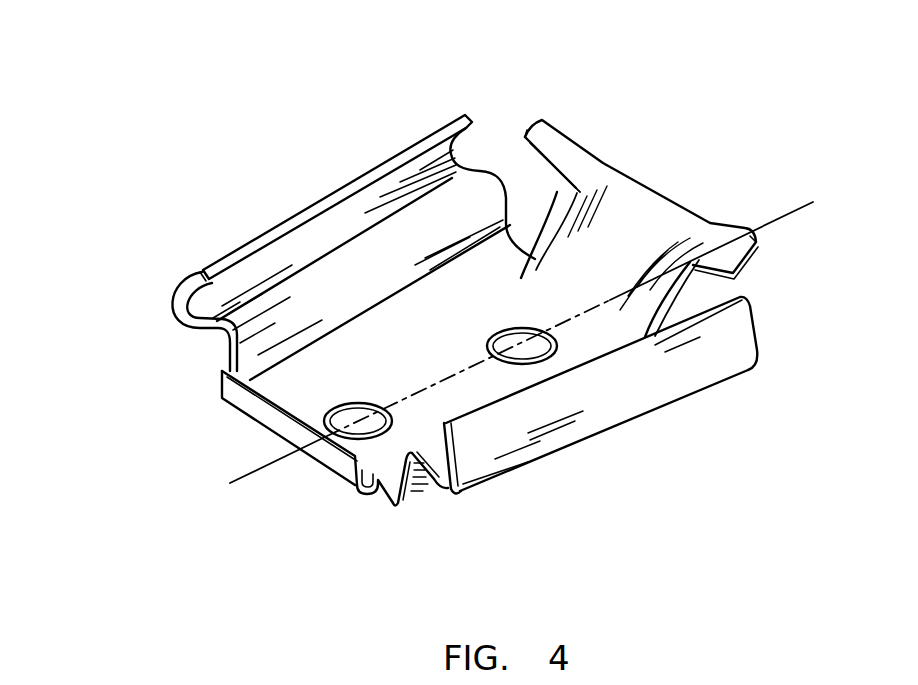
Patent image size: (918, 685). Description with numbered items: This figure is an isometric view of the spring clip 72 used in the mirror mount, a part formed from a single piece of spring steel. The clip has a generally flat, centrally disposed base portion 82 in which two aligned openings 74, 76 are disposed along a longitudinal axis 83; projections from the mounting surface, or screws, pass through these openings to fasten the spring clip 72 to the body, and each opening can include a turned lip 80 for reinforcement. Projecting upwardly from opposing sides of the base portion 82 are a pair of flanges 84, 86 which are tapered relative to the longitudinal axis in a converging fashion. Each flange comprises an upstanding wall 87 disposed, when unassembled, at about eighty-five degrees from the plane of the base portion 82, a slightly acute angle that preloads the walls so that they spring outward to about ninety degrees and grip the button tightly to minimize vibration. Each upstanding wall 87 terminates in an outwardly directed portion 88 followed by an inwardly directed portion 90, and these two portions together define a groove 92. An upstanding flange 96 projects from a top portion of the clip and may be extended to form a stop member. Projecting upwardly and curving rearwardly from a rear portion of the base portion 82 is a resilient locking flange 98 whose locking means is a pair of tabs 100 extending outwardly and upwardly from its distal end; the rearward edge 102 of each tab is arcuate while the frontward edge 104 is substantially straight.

The spring clip 72 is at (760, 382).
The opening 74 is at (350, 418).
The opening 76 is at (535, 350).
The turned lip 80 is at (523, 333).
The base portion 82 is at (443, 331).
The longitudinal axis 83 is at (266, 470).
The flange 84 is at (178, 332).
The flange 86 is at (458, 504).
The upstanding wall 87 is at (487, 188).
The outwardly directed portion 88 is at (221, 339).
The inwardly directed portion 90 is at (208, 292).
The groove 92 is at (201, 276).
The upstanding flange 96 is at (252, 407).
The resilient locking flange 98 is at (632, 212).
The tab 100 is at (553, 128).
The rearward edge 102 is at (553, 115).
The frontward edge 104 is at (558, 185).